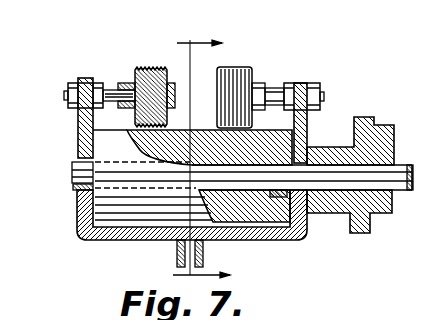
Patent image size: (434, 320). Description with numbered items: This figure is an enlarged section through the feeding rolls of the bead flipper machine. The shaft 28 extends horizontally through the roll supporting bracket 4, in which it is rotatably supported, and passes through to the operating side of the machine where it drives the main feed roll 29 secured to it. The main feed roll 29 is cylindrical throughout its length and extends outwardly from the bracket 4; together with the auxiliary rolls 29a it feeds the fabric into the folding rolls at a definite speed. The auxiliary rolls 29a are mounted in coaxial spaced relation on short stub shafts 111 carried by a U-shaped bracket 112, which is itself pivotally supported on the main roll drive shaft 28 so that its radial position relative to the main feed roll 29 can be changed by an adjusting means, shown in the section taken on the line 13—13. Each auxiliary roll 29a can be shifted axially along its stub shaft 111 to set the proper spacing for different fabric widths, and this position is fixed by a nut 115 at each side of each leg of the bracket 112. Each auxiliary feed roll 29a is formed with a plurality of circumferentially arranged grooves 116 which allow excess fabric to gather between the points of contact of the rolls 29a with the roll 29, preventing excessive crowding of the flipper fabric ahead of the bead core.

The roll supporting bracket 4 is at (378, 131).
The section line 13— 13 is at (205, 149).
The shaft 28 is at (411, 192).
The main feed roll 29 is at (108, 146).
The auxiliary feed rolls 29a is at (135, 66).
The stub shafts 111 is at (66, 95).
The U-shaped bracket 112 is at (77, 200).
The nut 115 is at (88, 83).
The grooves 116 is at (155, 66).